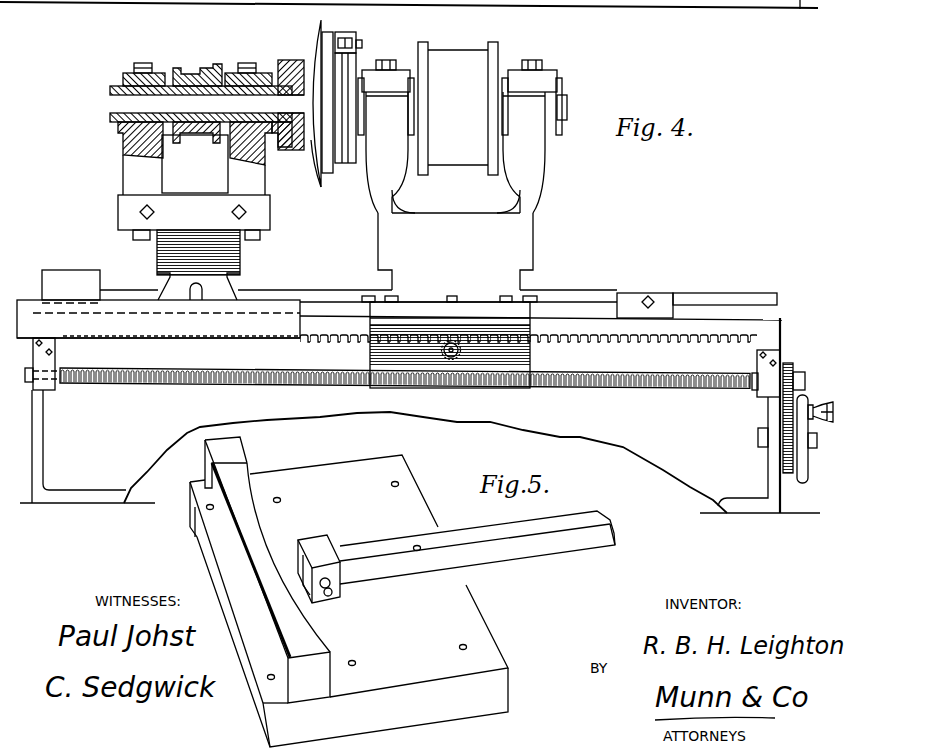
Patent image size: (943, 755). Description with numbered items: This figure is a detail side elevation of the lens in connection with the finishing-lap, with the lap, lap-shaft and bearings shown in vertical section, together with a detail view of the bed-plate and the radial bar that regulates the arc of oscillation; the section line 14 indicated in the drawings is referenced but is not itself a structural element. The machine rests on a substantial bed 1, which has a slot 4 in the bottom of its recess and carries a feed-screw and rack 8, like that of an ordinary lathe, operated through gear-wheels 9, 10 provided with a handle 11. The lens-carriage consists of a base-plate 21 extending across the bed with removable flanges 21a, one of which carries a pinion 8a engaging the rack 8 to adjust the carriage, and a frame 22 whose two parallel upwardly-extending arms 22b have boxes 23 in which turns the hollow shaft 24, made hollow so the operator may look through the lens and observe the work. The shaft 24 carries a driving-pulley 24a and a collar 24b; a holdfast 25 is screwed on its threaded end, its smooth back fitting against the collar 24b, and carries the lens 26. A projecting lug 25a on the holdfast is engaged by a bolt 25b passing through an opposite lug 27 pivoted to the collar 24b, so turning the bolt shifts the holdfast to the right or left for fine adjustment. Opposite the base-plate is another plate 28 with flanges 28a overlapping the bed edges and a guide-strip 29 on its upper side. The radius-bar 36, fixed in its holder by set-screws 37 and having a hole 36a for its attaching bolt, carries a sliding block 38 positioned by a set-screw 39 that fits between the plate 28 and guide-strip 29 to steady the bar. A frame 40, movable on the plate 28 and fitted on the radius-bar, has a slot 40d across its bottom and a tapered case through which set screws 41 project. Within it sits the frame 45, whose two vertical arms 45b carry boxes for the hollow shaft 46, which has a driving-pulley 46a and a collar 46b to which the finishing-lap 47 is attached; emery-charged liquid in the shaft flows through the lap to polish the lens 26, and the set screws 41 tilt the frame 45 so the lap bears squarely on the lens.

In FIG. 4, the bed 1 is at (420, 415).
In FIG. 4, the slot 4 is at (609, 377).
In FIG. 4, the rack 8 is at (653, 337).
In FIG. 4, the pinion 8a is at (459, 353).
In FIG. 4, the gear-wheel 9 is at (794, 369).
In FIG. 4, the gear-wheel 10 is at (800, 406).
In FIG. 4, the handle 11 is at (822, 419).
In FIG. 4, the section line 14 is at (658, 311).
In FIG. 4, the base-plate 21 is at (477, 311).
In FIG. 4, the removable flanges 21a is at (516, 322).
In FIG. 4, the frame 22 is at (455, 251).
In FIG. 4, the upwardly-extending arms 22b is at (455, 152).
In FIG. 4, the boxes 23 is at (460, 97).
In FIG. 4, the hollow shaft 24 is at (569, 111).
In FIG. 4, the driving-pulley 24a is at (458, 108).
In FIG. 4, the collar 24b is at (350, 152).
In FIG. 4, the holdfast 25 is at (328, 176).
In FIG. 4, the projecting lug 25a is at (344, 34).
In FIG. 4, the bolt 25b is at (363, 46).
In FIG. 4, the lens 26 is at (315, 178).
In FIG. 4, the lug 27 is at (355, 40).
In FIG. 4, the plate 28 is at (35, 304).
In FIG. 5, the plate 28 is at (379, 576).
In FIG. 4, the flanges 28a is at (107, 323).
In FIG. 5, the flanges 28a is at (349, 637).
In FIG. 4, the guide-strip 29 is at (71, 285).
In FIG. 5, the guide-strip 29 is at (260, 570).
In FIG. 4, the radius-bar 36 is at (334, 299).
In FIG. 5, the hole 36a is at (417, 545).
In FIG. 4, the set-screws 37 is at (648, 296).
In FIG. 5, the block 38 is at (318, 540).
In FIG. 5, the set-screw 39 is at (329, 597).
In FIG. 4, the frame 40 is at (234, 285).
In FIG. 4, the slot 40d is at (191, 301).
In FIG. 4, the set screws 41 is at (154, 212).
In FIG. 4, the frame 45 is at (195, 164).
In FIG. 4, the vertical arms 45b is at (127, 184).
In FIG. 4, the hollow shaft 46 is at (112, 87).
In FIG. 4, the driving-pulley 46a is at (200, 76).
In FIG. 4, the collar 46b is at (285, 62).
In FIG. 4, the finishing-lap 47 is at (313, 55).